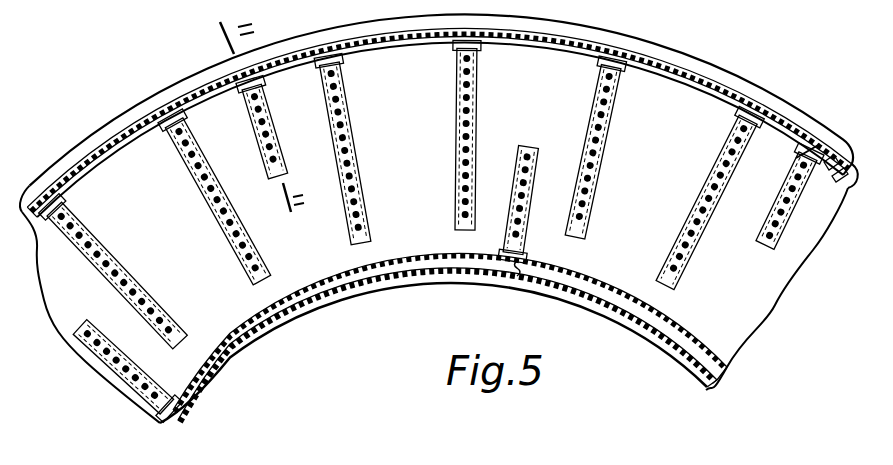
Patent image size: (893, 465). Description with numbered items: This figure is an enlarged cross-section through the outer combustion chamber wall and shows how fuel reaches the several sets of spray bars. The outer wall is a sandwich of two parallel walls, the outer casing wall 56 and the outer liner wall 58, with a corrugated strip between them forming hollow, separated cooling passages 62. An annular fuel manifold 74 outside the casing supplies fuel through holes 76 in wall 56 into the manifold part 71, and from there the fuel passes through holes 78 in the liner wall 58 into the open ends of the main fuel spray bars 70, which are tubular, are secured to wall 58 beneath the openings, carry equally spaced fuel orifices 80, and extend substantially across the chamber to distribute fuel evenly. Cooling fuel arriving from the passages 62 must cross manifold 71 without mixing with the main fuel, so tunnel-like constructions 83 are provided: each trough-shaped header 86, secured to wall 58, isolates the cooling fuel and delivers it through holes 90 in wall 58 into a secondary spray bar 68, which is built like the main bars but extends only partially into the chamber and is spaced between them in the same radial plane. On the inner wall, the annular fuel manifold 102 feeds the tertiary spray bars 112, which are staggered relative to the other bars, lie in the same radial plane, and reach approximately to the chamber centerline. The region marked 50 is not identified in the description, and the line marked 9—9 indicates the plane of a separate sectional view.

The shell segment 50 is at (687, 97).
The outer casing wall 56 is at (373, 30).
The outer liner wall 58 is at (557, 50).
The cooling passages 62 is at (523, 39).
The secondary fuel spray bars 68 is at (283, 132).
The main fuel spray bars 70 is at (129, 268).
The manifold part 71 is at (593, 50).
The annular fuel manifold 74 is at (680, 52).
The holes 76 is at (343, 113).
The holes 78 is at (176, 118).
The fuel orifices 80 is at (100, 232).
The tunnel-like constructions 83 is at (806, 144).
The header 86 is at (827, 155).
The holes 90 is at (834, 166).
The annular fuel manifold 102 is at (517, 268).
The tertiary fuel spray bars 112 is at (511, 191).
The section line 9- 9 is at (228, 33).